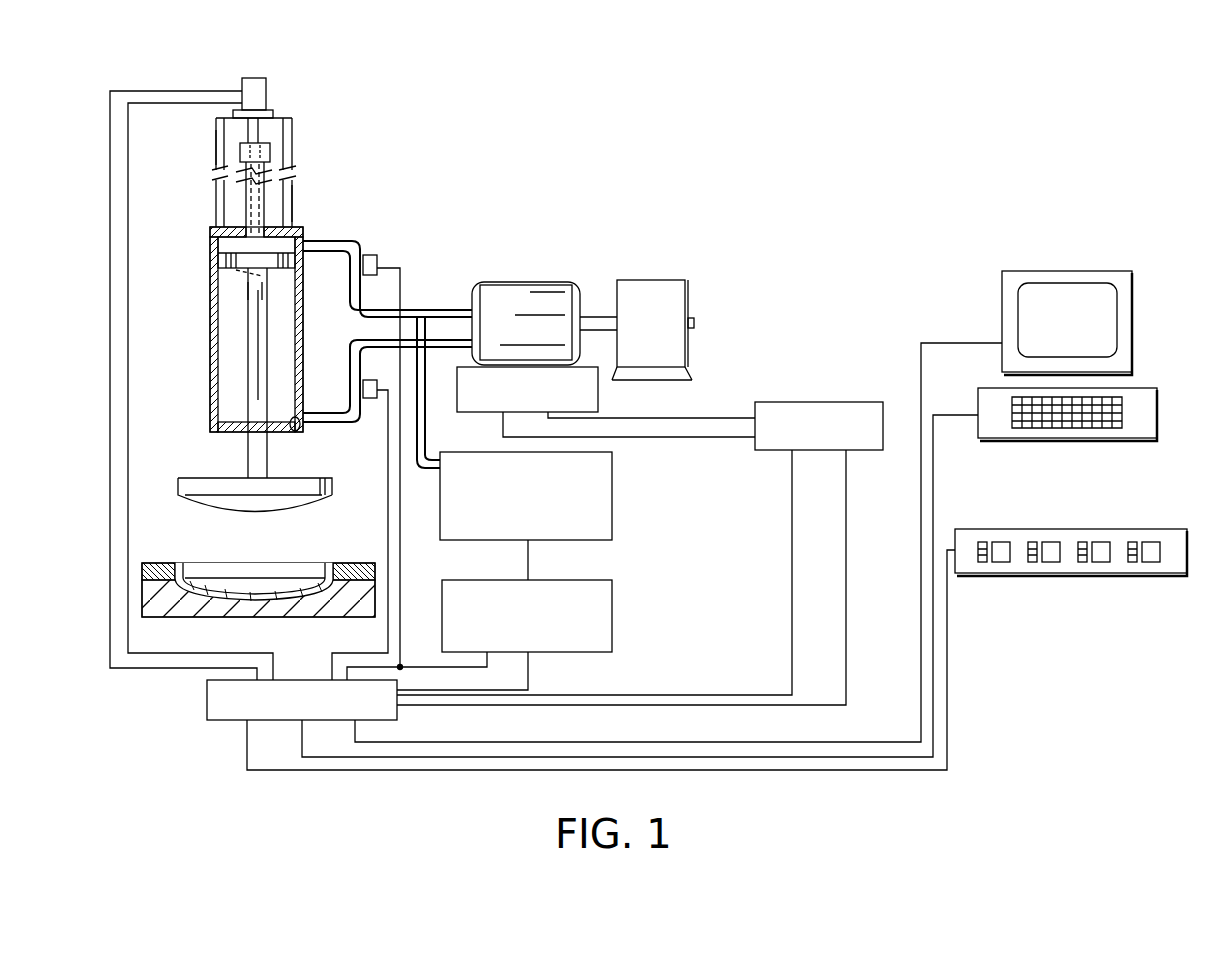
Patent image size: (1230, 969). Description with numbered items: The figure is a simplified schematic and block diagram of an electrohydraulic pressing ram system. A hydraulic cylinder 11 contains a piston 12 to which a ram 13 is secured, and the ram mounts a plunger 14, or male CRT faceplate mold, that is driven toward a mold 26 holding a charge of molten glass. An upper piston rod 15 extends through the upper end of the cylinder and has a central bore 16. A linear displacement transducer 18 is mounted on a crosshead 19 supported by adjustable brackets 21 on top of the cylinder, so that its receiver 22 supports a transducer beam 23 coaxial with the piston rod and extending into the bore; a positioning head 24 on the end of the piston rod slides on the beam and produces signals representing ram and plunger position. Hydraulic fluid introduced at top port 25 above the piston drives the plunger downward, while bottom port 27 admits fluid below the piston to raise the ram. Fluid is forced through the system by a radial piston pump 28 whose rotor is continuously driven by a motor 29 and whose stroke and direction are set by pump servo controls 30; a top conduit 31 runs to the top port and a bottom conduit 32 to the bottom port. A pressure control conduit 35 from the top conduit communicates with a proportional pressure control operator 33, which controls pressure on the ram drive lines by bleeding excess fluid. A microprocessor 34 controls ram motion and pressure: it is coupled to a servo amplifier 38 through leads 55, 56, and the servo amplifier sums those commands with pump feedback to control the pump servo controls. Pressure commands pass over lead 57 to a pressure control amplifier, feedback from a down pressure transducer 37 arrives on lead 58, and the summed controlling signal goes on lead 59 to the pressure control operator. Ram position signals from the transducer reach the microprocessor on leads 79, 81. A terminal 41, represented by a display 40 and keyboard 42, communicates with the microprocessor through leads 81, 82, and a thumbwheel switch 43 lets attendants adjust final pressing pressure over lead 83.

The hydraulic cylinder 11 is at (212, 352).
The piston 12 is at (235, 258).
The ram 13 is at (247, 462).
The plunger 14 is at (206, 478).
The upper piston rod 15 is at (248, 200).
The central bore 16 is at (246, 298).
The linear displacement transducer 18 is at (276, 84).
The crosshead 19 is at (290, 118).
The adjustable brackets 21 is at (216, 145).
The receiver 22 is at (256, 78).
The transducer beam 23 is at (262, 133).
The positioning head 24 is at (270, 153).
The top port 25 is at (296, 230).
The mold 26 is at (287, 578).
The bottom port 27 is at (300, 428).
The radial piston pump 28 is at (514, 282).
The motor 29 is at (632, 280).
The pump servo controls 30 is at (600, 400).
The top conduit 31 is at (354, 241).
The bottom conduit 32 is at (330, 412).
The proportional pressure control operator 33 is at (612, 498).
The microprocessor 34 is at (207, 694).
The pressure control conduit 35 is at (426, 448).
The down pressure transducer 37 is at (378, 258).
The servo amplifier 38 is at (798, 402).
The display 40 is at (1067, 283).
The terminal 41 is at (1002, 378).
The keyboard 42 is at (1046, 439).
The thumbwheel switch 43 is at (1075, 529).
The lead 55 is at (792, 562).
The lead 56 is at (846, 580).
The lead 57 is at (530, 682).
The lead 58 is at (440, 668).
The lead 59 is at (530, 560).
The lead 79 is at (112, 415).
The lead 81 is at (130, 388).
The lead 82 is at (933, 486).
The lead 83 is at (947, 698).